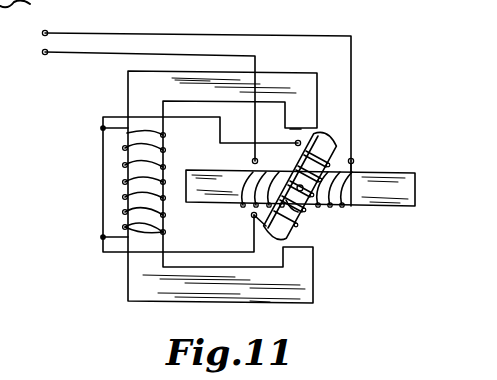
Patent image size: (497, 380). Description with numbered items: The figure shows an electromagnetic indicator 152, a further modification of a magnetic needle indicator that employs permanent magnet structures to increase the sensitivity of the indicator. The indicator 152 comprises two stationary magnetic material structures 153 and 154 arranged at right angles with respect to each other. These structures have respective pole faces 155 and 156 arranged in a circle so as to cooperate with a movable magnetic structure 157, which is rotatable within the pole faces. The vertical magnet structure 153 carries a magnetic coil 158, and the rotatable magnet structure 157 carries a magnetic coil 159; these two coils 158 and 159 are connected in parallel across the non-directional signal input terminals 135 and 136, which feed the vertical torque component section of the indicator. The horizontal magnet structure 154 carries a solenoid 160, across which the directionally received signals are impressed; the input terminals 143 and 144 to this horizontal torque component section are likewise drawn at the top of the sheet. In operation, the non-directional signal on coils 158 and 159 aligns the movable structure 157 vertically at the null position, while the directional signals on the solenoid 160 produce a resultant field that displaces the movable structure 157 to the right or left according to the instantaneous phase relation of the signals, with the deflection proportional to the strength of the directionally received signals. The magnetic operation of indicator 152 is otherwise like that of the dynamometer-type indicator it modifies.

The input terminal 135 is at (42, 194).
The input terminal 136 is at (50, 170).
The input terminal 143 is at (50, 20).
The input terminal 144 is at (46, 55).
The electromagnetic indicator 152 is at (360, 275).
The stationary magnetic material structure 153 is at (296, 66).
The stationary magnetic material structure 154 is at (427, 169).
The pole face 155 is at (299, 127).
The pole face 156 is at (242, 182).
The movable magnetic structure 157 is at (296, 228).
The magnetic coil 158 is at (123, 182).
The magnetic coil 159 is at (310, 208).
The solenoid 160 is at (276, 155).